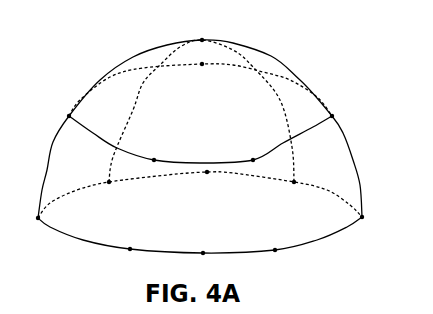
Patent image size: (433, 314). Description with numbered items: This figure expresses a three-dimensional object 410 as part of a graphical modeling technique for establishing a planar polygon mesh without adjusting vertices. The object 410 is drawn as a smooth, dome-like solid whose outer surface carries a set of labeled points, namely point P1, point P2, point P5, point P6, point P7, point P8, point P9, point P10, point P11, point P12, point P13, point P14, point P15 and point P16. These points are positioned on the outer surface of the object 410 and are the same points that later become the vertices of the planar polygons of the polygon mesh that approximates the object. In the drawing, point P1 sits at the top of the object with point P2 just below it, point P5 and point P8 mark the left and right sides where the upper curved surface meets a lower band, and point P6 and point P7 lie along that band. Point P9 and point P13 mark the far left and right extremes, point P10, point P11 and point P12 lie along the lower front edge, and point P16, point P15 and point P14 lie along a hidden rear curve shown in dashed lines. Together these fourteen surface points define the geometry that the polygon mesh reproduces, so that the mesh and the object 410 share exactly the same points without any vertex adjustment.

The 3D object 410 is at (163, 34).
The point P1 is at (209, 34).
The point P2 is at (209, 72).
The point P5 is at (62, 112).
The point P6 is at (162, 154).
The point P7 is at (246, 155).
The point P8 is at (340, 111).
The point P9 is at (30, 214).
The point P10 is at (121, 255).
The point P11 is at (194, 260).
The point P12 is at (268, 257).
The point P13 is at (371, 224).
The point P14 is at (303, 189).
The point P15 is at (197, 178).
The point P16 is at (102, 188).